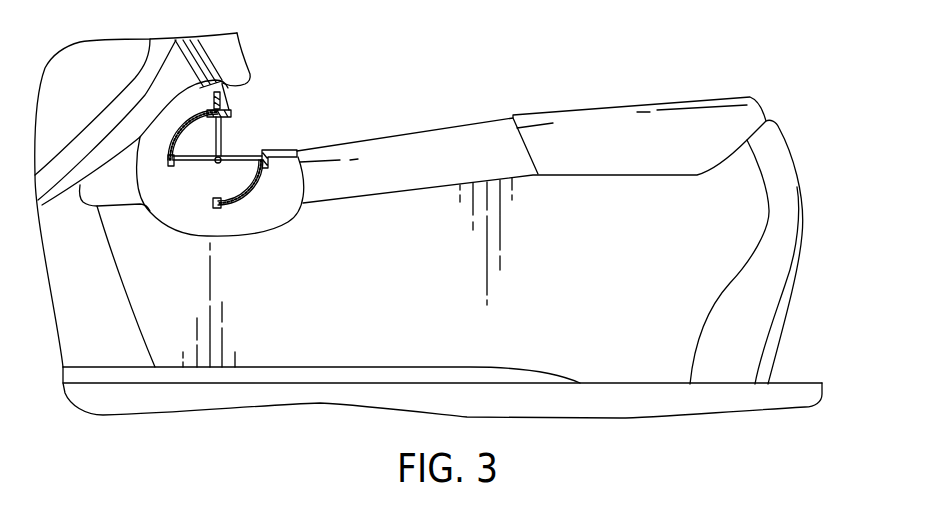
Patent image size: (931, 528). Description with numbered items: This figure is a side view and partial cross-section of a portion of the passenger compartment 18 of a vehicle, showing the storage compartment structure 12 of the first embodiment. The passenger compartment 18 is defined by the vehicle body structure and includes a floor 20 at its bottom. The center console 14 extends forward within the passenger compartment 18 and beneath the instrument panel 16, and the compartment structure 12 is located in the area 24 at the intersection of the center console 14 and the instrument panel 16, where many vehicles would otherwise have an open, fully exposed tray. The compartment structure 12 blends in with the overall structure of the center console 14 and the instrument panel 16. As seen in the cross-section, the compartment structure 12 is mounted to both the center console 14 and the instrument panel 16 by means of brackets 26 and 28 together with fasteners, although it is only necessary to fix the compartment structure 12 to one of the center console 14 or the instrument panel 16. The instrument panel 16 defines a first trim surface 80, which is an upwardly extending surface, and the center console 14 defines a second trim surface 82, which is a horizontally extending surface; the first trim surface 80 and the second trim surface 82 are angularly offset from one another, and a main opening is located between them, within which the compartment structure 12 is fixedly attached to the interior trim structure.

The compartment structure 12 is at (246, 207).
The center console 14 is at (586, 108).
The instrument panel 16 is at (233, 58).
The passenger compartment 18 is at (302, 86).
The floor 20 is at (788, 383).
The area 24 is at (238, 115).
The bracket 26 is at (214, 110).
The bracket 28 is at (270, 167).
The first trim surface 80 is at (231, 104).
The second trim surface 82 is at (280, 147).